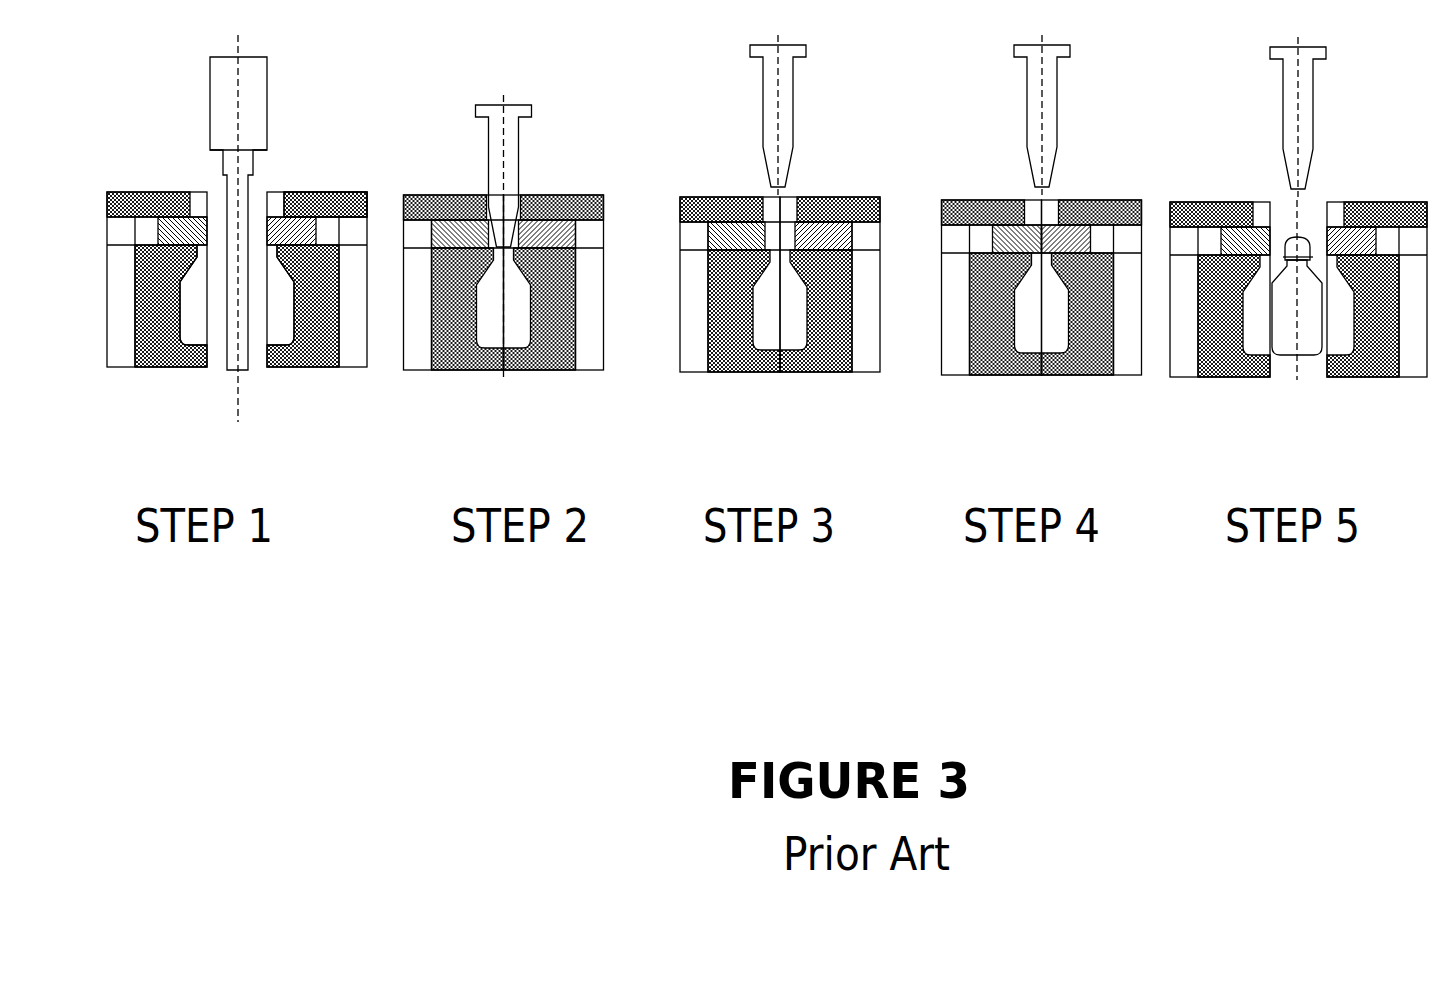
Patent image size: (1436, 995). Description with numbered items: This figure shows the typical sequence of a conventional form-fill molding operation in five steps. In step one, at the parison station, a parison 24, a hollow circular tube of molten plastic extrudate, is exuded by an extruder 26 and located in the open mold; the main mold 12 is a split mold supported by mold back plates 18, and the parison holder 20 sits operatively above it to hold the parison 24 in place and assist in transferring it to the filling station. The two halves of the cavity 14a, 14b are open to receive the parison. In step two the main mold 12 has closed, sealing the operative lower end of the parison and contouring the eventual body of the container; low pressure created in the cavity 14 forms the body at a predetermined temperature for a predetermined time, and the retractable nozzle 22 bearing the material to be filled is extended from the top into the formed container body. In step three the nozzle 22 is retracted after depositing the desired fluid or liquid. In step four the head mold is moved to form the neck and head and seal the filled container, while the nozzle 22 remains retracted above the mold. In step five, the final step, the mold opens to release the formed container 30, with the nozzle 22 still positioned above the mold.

The main mold 12 is at (342, 326).
The cavity 14 is at (504, 329).
The first cavity half 14a is at (192, 318).
The second cavity half 14b is at (277, 318).
The mold back plate 18 is at (122, 318).
The parison holder 20 is at (349, 175).
The retractable nozzle 22 is at (518, 157).
The parison 24 is at (235, 249).
The extruder 26 is at (268, 100).
The formed container 30 is at (1289, 333).